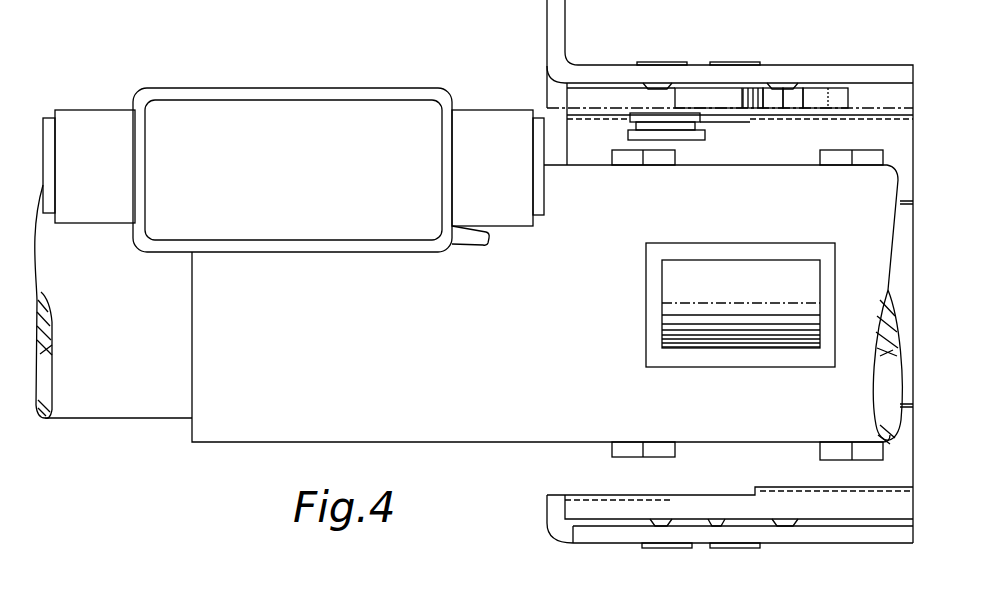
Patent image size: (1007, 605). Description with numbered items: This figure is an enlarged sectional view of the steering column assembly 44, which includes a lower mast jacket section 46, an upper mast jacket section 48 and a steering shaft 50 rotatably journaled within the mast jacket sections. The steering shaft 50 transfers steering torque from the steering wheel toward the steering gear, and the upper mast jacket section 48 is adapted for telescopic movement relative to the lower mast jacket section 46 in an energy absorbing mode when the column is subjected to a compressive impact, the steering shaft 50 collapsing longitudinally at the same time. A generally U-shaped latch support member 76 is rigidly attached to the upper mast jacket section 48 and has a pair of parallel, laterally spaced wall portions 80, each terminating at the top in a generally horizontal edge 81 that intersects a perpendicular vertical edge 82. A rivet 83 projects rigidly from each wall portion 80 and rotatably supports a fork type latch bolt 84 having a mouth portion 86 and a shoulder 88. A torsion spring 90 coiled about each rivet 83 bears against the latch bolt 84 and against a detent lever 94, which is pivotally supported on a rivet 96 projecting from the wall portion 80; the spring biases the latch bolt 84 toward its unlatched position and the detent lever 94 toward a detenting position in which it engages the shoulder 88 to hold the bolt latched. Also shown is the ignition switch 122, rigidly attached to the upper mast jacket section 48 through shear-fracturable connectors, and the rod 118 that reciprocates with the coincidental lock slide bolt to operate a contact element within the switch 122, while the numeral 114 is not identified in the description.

The column assembly 44 is at (262, 425).
The lower mast jacket section 46 is at (113, 382).
The upper mast jacket section 48 is at (446, 412).
The steering shaft 50 is at (52, 322).
The latch support member 76 is at (826, 546).
The wall portions 80 is at (830, 70).
The horizontal edge 81 is at (786, 76).
The vertical edge 82 is at (717, 86).
The rivets 83 is at (688, 138).
The latch bolts 84 is at (707, 88).
The mouth portion 86 is at (690, 96).
The shoulder 88 is at (795, 102).
The torsion spring 90 is at (655, 116).
The detent levers 94 is at (850, 98).
The rivets 96 is at (737, 63).
The window 114 is at (688, 303).
The rod 118 is at (470, 238).
The ignition switch 122 is at (90, 120).